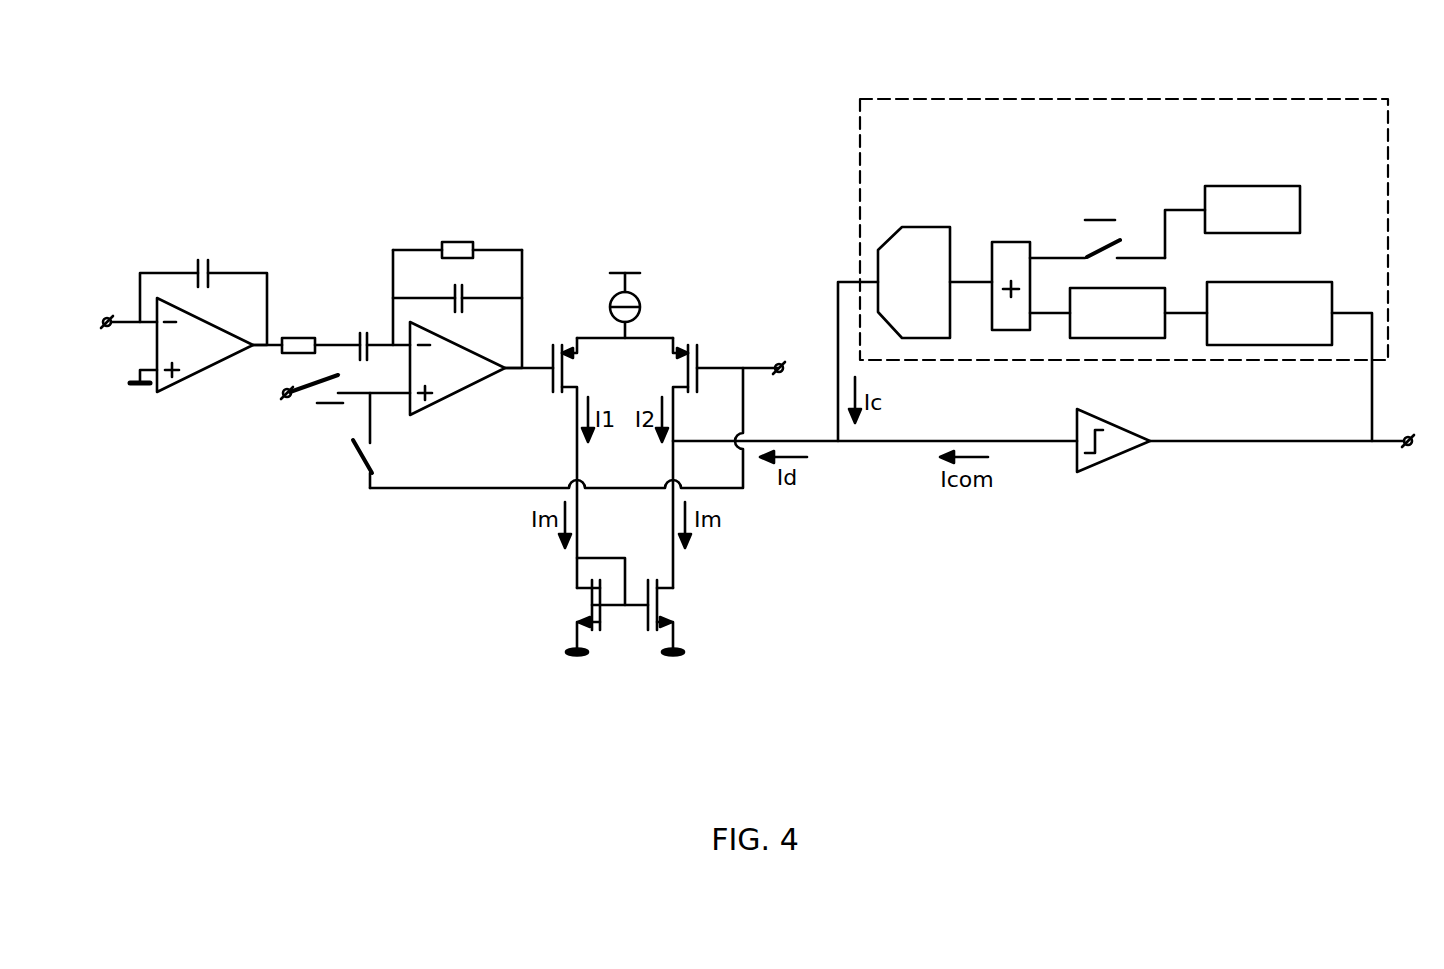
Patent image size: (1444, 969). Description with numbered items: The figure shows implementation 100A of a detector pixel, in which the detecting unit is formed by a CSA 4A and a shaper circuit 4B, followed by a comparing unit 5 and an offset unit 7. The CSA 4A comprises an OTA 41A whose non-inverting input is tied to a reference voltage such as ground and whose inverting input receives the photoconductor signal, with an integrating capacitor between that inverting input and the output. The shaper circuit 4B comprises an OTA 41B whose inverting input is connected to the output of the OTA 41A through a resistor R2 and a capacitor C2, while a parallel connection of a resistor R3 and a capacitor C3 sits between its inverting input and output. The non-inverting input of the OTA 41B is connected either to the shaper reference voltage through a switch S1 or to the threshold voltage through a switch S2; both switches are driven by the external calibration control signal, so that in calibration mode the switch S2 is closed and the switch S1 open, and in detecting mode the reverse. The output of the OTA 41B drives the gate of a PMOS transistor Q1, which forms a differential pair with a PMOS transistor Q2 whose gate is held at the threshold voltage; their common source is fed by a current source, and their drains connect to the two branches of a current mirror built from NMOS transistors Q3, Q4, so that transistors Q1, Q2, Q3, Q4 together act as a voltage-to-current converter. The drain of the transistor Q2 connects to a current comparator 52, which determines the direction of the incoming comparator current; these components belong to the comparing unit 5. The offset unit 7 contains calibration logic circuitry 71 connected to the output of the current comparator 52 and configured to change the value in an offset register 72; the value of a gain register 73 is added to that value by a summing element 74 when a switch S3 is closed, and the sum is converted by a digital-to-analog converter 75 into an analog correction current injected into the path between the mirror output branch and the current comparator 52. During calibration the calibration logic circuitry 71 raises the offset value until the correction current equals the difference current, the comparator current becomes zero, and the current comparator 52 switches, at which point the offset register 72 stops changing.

The detector pixel implementation 100A is at (637, 87).
The CSA 4A is at (115, 195).
The shaper circuit 4B is at (535, 195).
The comparing unit 5 is at (525, 665).
The offset unit 7 is at (1388, 98).
The OTA 41A is at (177, 380).
The OTA 41B is at (450, 387).
The resistor R2 is at (306, 330).
The capacitor C2 is at (378, 334).
The resistor R3 is at (457, 238).
The capacitor C3 is at (457, 312).
The switch S1 is at (303, 397).
The switch S2 is at (355, 460).
The switch S3 is at (1113, 222).
The PMOS transistor Q1 is at (551, 463).
The PMOS transistor Q2 is at (745, 462).
The NMOS transistor Q3 is at (596, 607).
The NMOS transistor Q4 is at (676, 618).
The current comparator 52 is at (1095, 470).
The calibration logic circuitry 71 is at (1270, 350).
The offset register 72 is at (1133, 340).
The gain register 73 is at (1257, 183).
The summing element 74 is at (1003, 238).
The digital-to-analog converter 75 is at (925, 222).